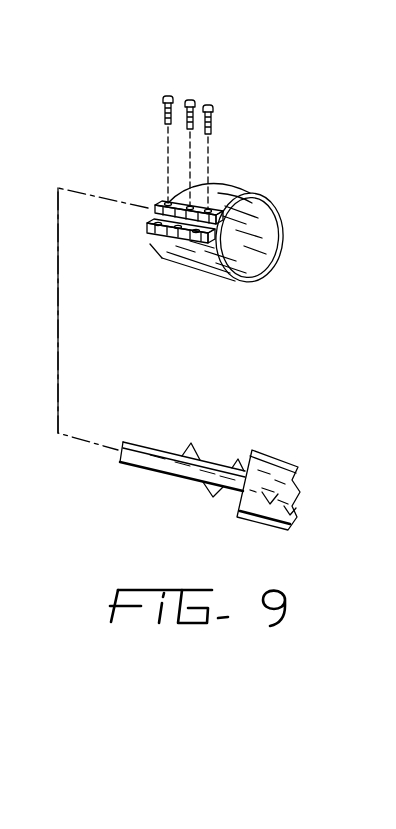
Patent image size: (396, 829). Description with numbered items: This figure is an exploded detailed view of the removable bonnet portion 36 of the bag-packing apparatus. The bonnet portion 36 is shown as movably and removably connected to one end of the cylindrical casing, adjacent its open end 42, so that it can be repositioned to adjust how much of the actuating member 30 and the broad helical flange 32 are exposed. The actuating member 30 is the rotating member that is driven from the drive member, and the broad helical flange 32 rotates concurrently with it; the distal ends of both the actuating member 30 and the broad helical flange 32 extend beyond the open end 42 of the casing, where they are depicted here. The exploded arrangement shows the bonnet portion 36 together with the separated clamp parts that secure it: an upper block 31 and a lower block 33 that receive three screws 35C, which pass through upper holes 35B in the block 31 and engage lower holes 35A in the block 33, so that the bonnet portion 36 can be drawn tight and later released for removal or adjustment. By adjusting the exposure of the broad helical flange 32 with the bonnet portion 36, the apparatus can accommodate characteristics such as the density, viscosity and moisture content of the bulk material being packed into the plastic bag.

The actuating member 30 is at (145, 460).
The upper clamp block 31 is at (157, 205).
The broad helical flange 32 is at (237, 462).
The lower clamp block 33 is at (150, 228).
The lower screw holes 35A is at (196, 233).
The upper screw holes 35B is at (193, 208).
The screws 35C is at (170, 96).
The bonnet portion 36 is at (284, 227).
The open end 42 is at (233, 512).